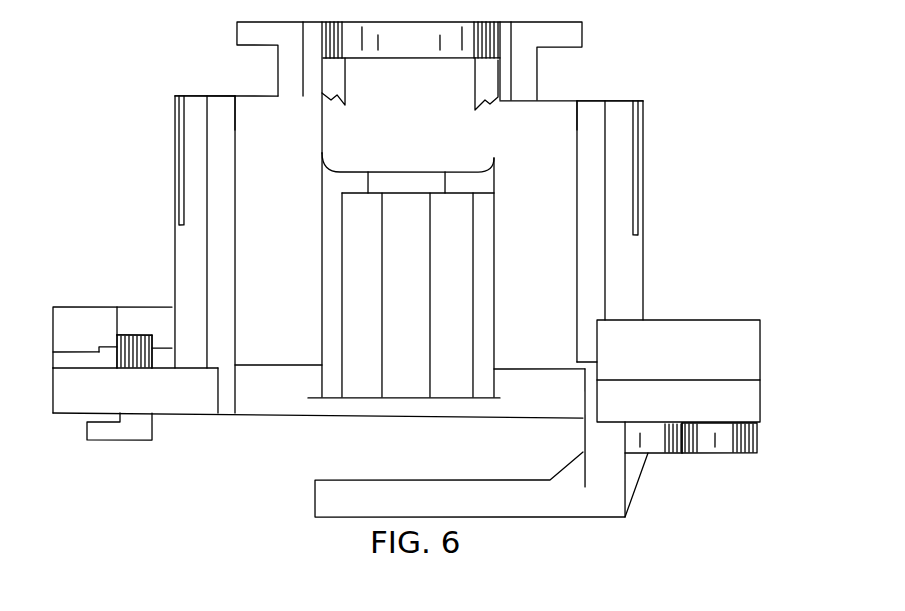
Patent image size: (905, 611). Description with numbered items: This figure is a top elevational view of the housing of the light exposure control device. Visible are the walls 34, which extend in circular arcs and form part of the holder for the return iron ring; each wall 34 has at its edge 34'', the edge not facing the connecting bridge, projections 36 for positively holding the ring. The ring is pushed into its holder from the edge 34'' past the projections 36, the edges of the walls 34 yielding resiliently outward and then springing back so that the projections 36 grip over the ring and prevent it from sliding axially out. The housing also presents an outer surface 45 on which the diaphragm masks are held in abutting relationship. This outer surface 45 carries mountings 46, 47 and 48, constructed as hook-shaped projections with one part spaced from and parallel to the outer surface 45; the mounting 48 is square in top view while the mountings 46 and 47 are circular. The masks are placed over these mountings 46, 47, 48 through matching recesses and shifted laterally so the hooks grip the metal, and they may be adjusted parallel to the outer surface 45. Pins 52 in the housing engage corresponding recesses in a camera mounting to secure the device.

The wall 34 is at (415, 255).
The edge of the wall 34'' is at (409, 74).
The projections 36 is at (239, 100).
The outer surface 45 is at (280, 416).
The mounting 46 is at (731, 440).
The mounting 47 is at (668, 440).
The mounting 48 is at (154, 429).
The pins 52 is at (136, 346).